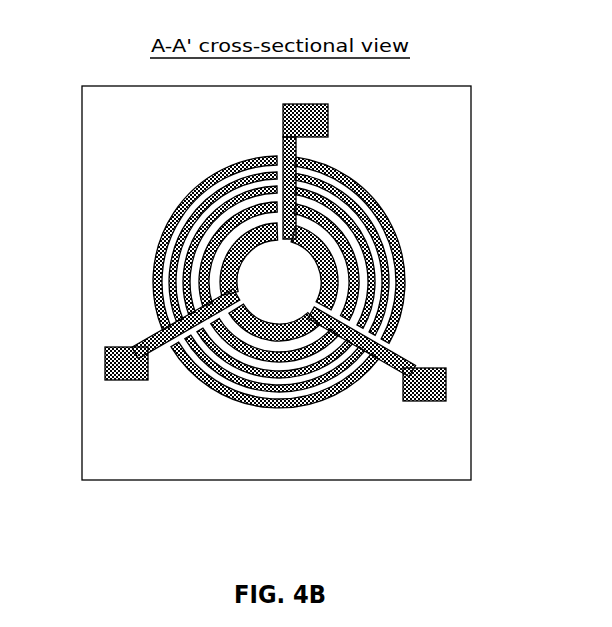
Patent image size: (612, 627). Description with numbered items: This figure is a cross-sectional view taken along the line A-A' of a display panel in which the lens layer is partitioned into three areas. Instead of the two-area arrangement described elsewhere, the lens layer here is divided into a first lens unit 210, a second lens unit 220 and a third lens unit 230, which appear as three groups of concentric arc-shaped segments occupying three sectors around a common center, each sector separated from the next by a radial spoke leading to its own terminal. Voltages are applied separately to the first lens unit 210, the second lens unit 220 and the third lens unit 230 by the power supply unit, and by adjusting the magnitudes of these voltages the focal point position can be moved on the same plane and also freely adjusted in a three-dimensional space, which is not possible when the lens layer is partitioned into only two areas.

The first lens unit 210 is at (172, 221).
The second lens unit 220 is at (405, 283).
The third lens unit 230 is at (198, 378).